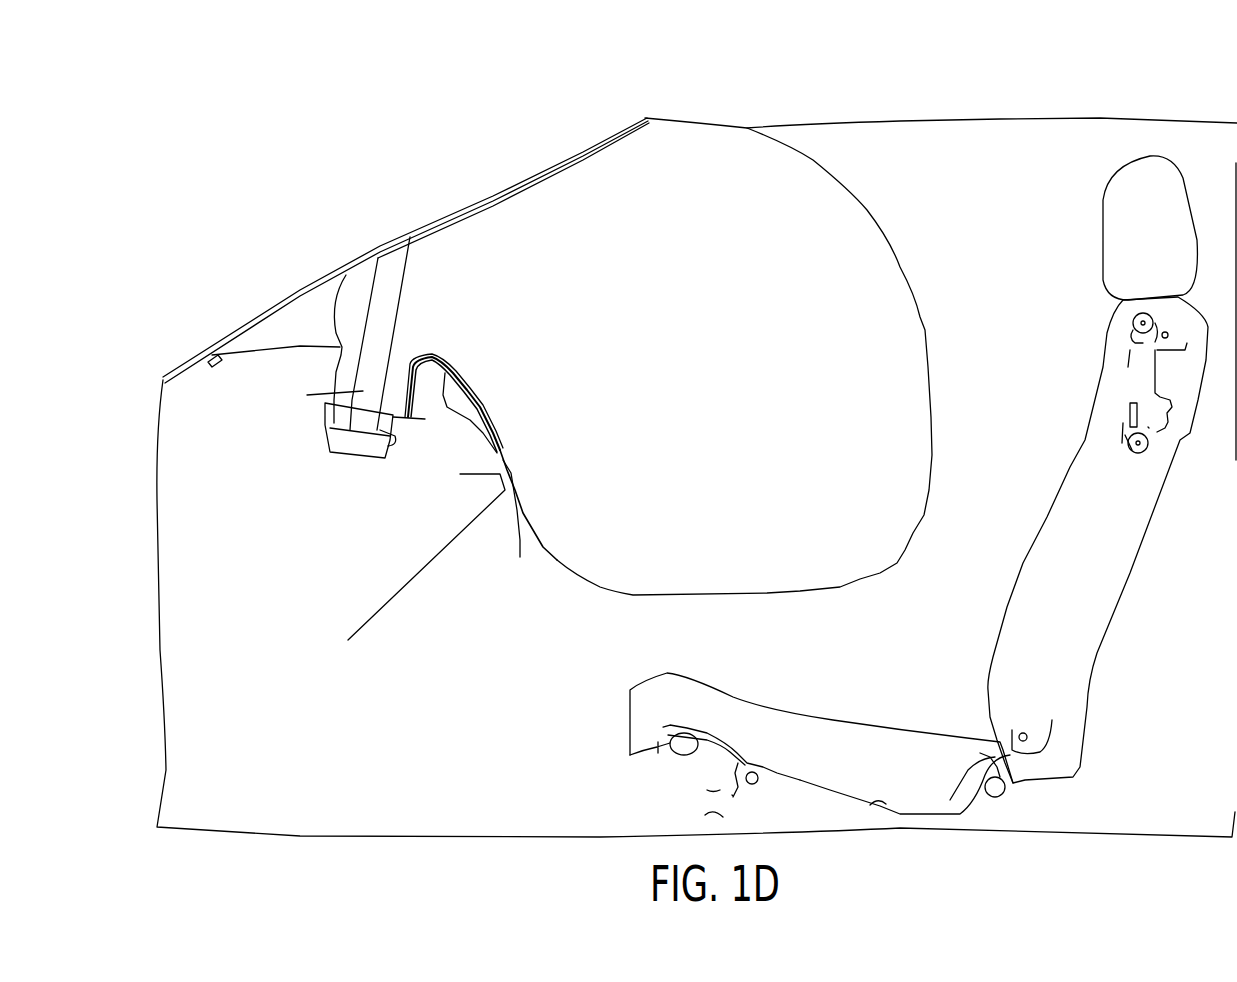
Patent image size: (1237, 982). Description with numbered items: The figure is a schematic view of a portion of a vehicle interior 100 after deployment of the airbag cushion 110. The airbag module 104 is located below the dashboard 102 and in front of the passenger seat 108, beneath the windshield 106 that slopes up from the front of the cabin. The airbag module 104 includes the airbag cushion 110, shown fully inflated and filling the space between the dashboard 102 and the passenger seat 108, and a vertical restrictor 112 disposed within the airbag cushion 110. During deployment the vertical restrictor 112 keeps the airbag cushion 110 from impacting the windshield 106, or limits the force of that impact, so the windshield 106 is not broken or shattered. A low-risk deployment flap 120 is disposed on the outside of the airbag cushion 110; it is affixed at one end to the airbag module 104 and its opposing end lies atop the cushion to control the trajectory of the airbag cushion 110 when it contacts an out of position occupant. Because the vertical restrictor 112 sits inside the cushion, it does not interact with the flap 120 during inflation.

The interior 100 is at (808, 102).
The dashboard 102 is at (500, 468).
The airbag module 104 is at (311, 452).
The windshield 106 is at (407, 221).
The passenger seat 108 is at (1072, 477).
The airbag cushion 110 is at (862, 243).
The vertical restrictor 112 is at (367, 391).
The low-risk deployment (LRD) flap 120 is at (515, 540).